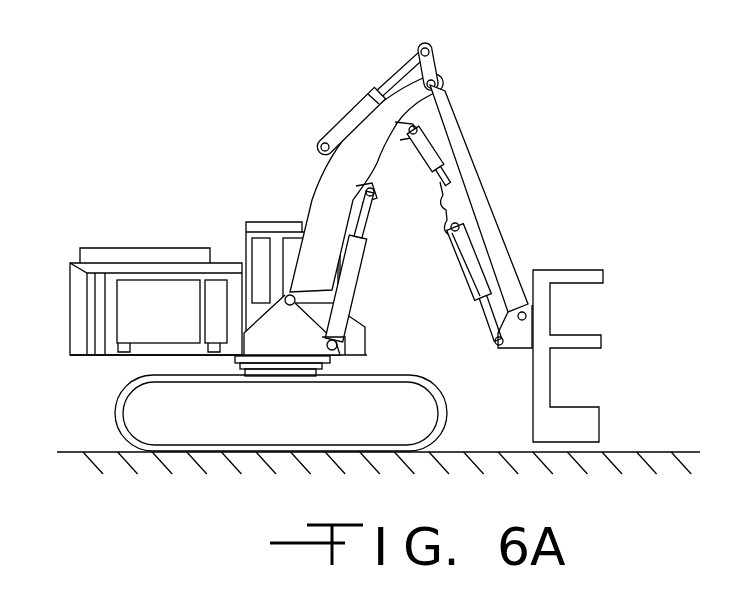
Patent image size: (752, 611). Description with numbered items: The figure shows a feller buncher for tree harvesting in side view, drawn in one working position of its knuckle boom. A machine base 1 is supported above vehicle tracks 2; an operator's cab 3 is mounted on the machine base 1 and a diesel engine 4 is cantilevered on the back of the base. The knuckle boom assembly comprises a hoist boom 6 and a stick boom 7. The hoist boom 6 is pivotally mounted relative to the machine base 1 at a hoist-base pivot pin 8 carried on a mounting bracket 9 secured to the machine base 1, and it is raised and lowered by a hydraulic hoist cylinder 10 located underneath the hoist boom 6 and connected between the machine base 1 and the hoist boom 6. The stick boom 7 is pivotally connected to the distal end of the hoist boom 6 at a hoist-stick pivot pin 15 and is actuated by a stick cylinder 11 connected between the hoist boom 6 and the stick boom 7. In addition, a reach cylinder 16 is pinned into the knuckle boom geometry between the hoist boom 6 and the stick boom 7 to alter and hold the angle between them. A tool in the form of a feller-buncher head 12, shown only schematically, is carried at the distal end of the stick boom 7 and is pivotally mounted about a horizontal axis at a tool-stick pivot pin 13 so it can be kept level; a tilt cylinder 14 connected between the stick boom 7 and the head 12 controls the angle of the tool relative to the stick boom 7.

The machine base 1 is at (120, 357).
The vehicle tracks 2 is at (113, 418).
The operator's cab 3 is at (270, 220).
The diesel engine 4 is at (147, 290).
The hoist boom 6 is at (335, 182).
The stick boom 7 is at (482, 175).
The hoist-base pivot pin 8 is at (288, 358).
The mounting bracket 9 is at (267, 337).
The hydraulic hoist cylinder 10 is at (357, 294).
The stick cylinder 11 is at (340, 117).
The feller-buncher head 12 is at (600, 421).
The tool-stick pivot pin 13 is at (504, 278).
The tilt cylinder 14 is at (458, 262).
The hoist-stick pivot pin 15 is at (440, 78).
The reach cylinder 16 is at (433, 143).